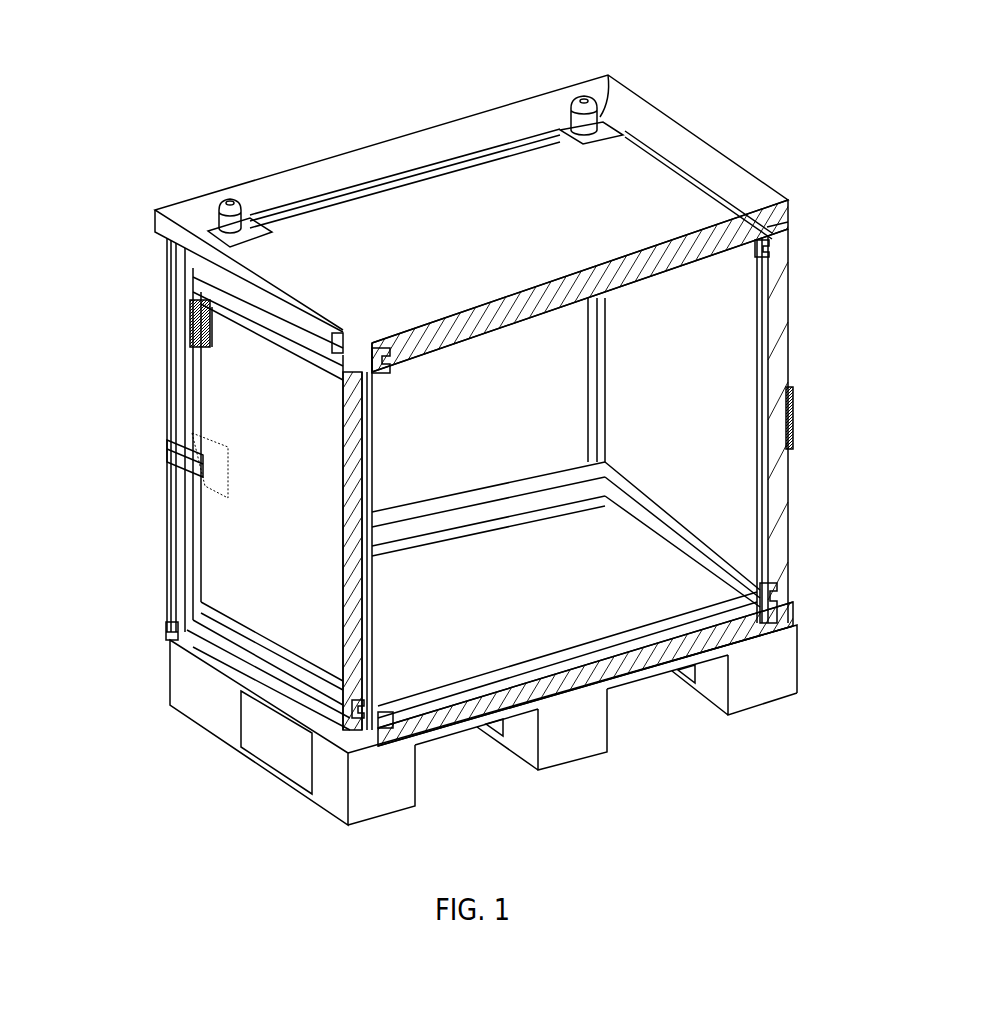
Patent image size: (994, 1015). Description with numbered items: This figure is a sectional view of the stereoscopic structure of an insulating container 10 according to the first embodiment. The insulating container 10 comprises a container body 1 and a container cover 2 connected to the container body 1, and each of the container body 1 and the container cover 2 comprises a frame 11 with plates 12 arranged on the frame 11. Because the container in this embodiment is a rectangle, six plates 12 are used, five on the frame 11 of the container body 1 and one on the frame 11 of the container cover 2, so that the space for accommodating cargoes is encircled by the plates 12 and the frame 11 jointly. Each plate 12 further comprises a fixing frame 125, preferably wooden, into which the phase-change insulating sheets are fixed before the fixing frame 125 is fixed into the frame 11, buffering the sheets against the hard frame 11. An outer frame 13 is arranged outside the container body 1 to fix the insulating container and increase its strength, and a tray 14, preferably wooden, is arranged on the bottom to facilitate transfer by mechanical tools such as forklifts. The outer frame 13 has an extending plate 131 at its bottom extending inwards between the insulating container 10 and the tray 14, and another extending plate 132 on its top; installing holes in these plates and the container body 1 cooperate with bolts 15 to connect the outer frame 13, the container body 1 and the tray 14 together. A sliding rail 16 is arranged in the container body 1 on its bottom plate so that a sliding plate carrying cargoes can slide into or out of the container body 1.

The insulating container 10 is at (178, 42).
The container body 1 is at (716, 487).
The container cover 2 is at (262, 558).
The frame 11 is at (362, 343).
The plate 12 is at (787, 337).
The outer frame 13 is at (737, 185).
The tray 14 is at (763, 670).
The bolt 15 is at (606, 76).
The sliding rail 16 is at (442, 527).
The fixing frame 125 is at (788, 222).
The extending plate 131 is at (170, 632).
The extending plate 132 is at (247, 220).